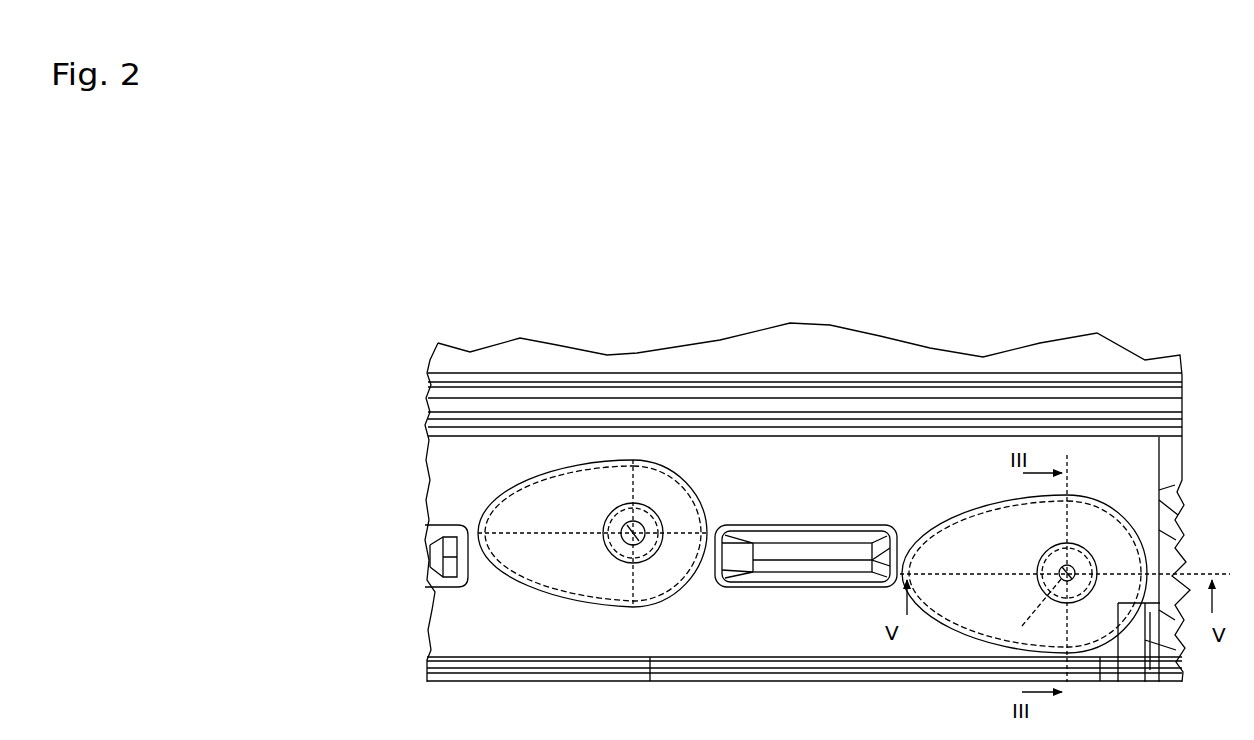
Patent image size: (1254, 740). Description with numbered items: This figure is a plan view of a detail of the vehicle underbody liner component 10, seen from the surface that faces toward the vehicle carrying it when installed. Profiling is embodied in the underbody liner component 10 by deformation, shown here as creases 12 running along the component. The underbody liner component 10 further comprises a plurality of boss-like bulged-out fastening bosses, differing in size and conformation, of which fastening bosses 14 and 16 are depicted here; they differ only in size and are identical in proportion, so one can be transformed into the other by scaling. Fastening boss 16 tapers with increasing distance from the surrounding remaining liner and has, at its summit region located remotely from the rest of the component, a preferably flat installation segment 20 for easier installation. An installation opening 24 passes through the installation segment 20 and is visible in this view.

The underbody liner component 10 is at (426, 261).
The crease 12 is at (808, 412).
The fastening boss 14 is at (652, 580).
The fastening boss 16 is at (1020, 629).
The installation segment 20 is at (1050, 587).
The installation opening 24 is at (1060, 568).